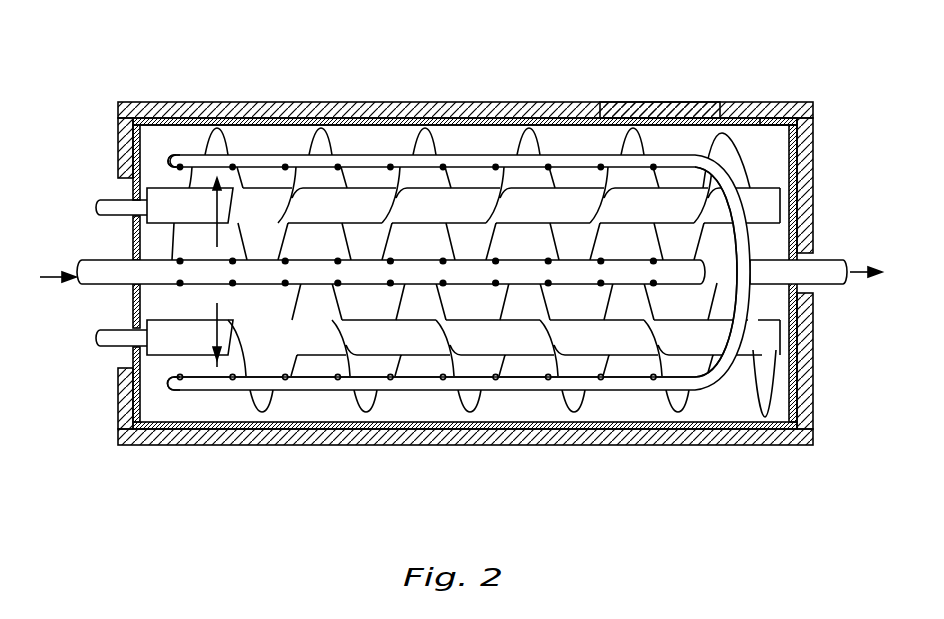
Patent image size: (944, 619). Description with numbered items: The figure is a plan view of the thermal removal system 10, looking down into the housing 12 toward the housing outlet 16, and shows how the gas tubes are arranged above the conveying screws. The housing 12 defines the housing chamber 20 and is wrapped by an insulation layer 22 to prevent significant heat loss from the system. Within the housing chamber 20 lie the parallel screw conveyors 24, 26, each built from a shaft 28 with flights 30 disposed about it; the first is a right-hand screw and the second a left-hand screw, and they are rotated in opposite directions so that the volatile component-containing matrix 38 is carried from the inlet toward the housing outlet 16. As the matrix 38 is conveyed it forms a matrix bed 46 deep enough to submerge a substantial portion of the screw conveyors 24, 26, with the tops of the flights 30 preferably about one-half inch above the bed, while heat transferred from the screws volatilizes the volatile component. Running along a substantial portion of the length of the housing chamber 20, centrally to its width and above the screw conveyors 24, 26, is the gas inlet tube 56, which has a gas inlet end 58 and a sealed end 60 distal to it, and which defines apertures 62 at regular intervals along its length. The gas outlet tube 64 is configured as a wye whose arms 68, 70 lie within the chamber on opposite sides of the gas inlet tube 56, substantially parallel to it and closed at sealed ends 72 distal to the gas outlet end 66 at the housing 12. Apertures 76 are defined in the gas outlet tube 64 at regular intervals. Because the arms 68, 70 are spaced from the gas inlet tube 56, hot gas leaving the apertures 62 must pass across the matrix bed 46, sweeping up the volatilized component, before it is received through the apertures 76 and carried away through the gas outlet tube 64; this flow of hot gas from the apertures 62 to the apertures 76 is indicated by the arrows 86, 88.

The thermal removal system 10 is at (182, 56).
The housing 12 is at (612, 437).
The housing outlet 16 is at (772, 128).
The housing chamber 20 is at (470, 118).
The insulation layer 22 is at (812, 402).
The screw conveyor 24 is at (410, 357).
The screw conveyor 26 is at (375, 190).
The shaft 28 is at (388, 343).
The flights 30 is at (416, 143).
The volatile component-containing matrix 38 is at (653, 123).
The matrix bed 46 is at (676, 120).
The gas inlet tube 56 is at (315, 247).
The gas inlet end 58 is at (103, 261).
The sealed end 60 is at (675, 283).
The apertures 62 is at (282, 251).
The gas outlet tube 64 is at (600, 156).
The gas outlet end 66 is at (833, 277).
The arm 68 is at (518, 383).
The arm 70 is at (560, 156).
The sealed ends 72 is at (168, 160).
The apertures 76 is at (173, 157).
The arrow 86 is at (213, 339).
The arrow 88 is at (222, 215).